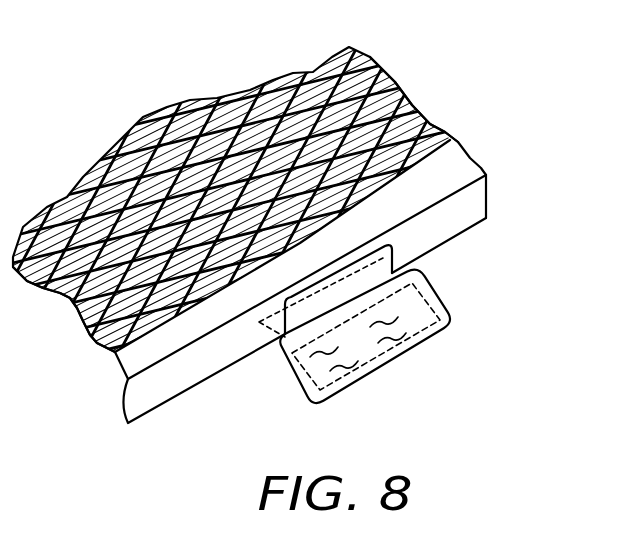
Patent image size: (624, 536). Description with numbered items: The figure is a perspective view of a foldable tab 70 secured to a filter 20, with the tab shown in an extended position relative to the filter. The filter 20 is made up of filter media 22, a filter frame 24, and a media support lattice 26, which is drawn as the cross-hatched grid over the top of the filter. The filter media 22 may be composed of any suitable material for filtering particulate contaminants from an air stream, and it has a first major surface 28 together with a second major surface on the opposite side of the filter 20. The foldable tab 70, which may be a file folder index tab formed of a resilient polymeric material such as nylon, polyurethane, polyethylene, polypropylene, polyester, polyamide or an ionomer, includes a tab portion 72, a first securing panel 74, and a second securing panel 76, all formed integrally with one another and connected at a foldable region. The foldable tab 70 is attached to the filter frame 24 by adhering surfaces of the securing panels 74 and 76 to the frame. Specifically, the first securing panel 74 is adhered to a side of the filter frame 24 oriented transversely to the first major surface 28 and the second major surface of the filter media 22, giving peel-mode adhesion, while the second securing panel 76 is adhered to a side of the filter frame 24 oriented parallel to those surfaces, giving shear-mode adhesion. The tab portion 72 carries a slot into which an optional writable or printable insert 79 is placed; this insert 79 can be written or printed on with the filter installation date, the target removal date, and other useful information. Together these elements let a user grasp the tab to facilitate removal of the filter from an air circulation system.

The filter 20 is at (275, 235).
The filter media 22 is at (337, 118).
The filter frame 24 is at (155, 353).
The media support lattice 26 is at (396, 87).
The first major surface 28 is at (115, 300).
The foldable tab 70 is at (371, 352).
The tab portion 72 is at (452, 306).
The first securing panel 74 is at (393, 247).
The second securing panel 76 is at (259, 322).
The writable or printable insert 79 is at (436, 333).